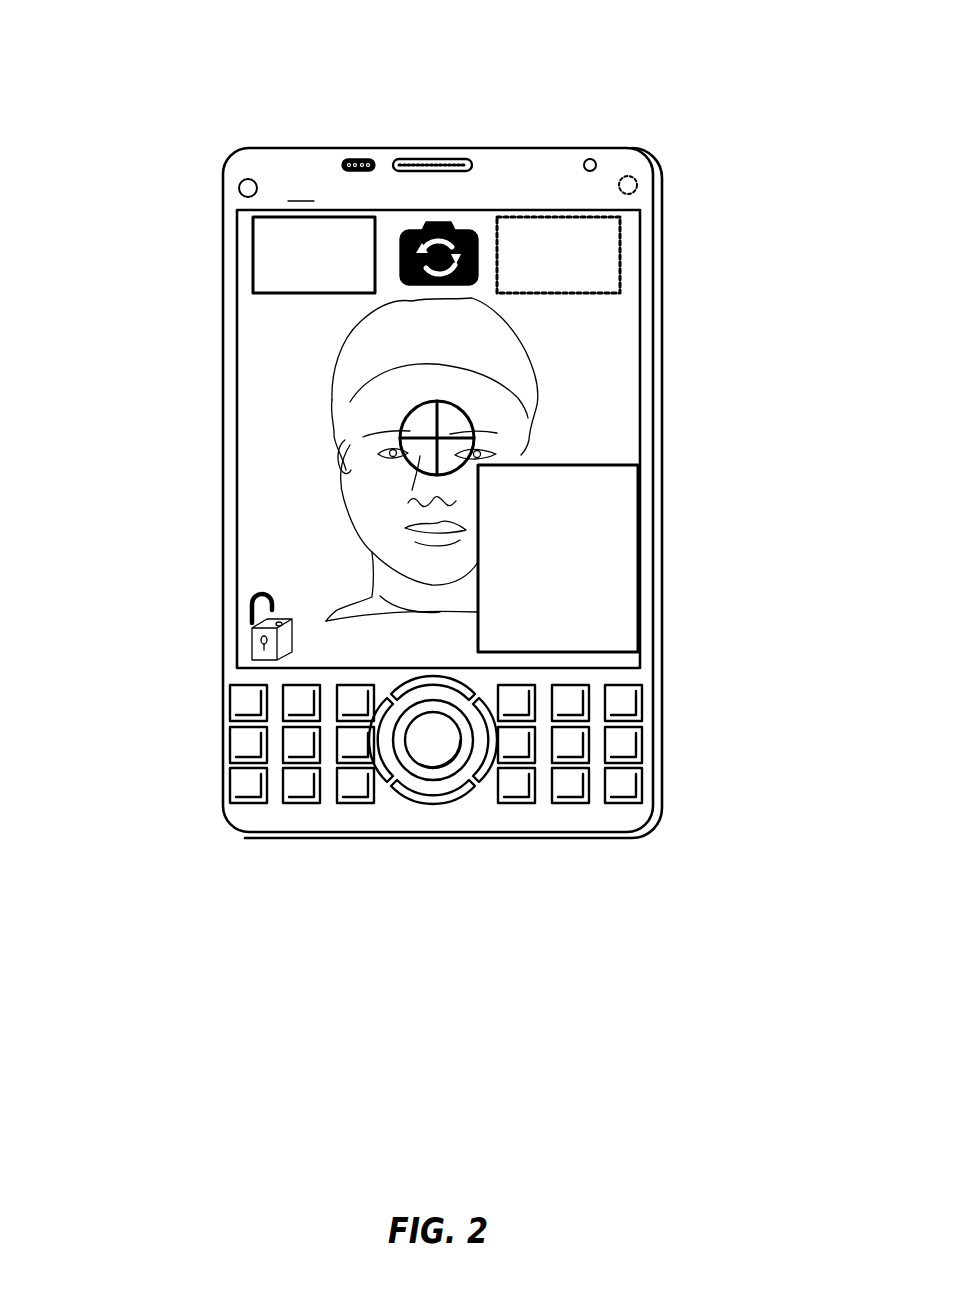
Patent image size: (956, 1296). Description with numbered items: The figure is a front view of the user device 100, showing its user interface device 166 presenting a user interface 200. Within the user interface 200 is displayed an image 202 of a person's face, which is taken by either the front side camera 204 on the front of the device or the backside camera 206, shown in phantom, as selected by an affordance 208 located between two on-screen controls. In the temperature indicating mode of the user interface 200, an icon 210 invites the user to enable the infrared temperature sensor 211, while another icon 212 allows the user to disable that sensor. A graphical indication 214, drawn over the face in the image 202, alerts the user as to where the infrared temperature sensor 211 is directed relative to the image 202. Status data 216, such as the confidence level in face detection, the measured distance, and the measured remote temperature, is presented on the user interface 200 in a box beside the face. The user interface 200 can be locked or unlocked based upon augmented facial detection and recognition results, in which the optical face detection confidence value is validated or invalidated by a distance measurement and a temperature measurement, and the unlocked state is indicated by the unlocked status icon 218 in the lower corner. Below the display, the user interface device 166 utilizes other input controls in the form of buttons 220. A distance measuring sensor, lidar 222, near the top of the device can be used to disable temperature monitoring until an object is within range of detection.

The user device 100 is at (222, 92).
The user interface device 166 is at (222, 445).
The user interface 200 is at (270, 407).
The image 202 is at (338, 369).
The front side camera 204 is at (256, 176).
The backside camera 206 is at (634, 176).
The affordance 208 is at (478, 232).
The icon 210 is at (253, 255).
The infrared temperature sensor 211 is at (355, 158).
The icon 212 is at (622, 251).
The graphical indication 214 is at (470, 412).
The status data 216 is at (640, 556).
The unlocked status icon 218 is at (250, 633).
The buttons 220 is at (648, 722).
The lidar 222 is at (591, 158).